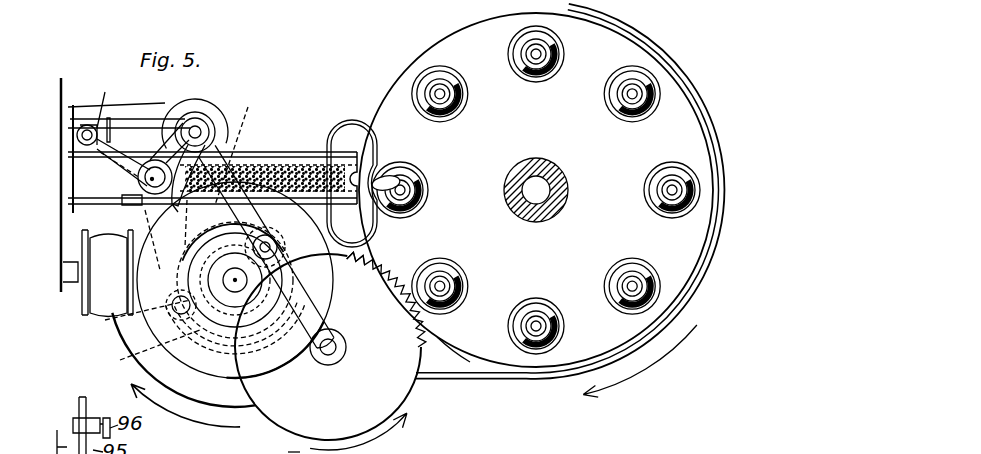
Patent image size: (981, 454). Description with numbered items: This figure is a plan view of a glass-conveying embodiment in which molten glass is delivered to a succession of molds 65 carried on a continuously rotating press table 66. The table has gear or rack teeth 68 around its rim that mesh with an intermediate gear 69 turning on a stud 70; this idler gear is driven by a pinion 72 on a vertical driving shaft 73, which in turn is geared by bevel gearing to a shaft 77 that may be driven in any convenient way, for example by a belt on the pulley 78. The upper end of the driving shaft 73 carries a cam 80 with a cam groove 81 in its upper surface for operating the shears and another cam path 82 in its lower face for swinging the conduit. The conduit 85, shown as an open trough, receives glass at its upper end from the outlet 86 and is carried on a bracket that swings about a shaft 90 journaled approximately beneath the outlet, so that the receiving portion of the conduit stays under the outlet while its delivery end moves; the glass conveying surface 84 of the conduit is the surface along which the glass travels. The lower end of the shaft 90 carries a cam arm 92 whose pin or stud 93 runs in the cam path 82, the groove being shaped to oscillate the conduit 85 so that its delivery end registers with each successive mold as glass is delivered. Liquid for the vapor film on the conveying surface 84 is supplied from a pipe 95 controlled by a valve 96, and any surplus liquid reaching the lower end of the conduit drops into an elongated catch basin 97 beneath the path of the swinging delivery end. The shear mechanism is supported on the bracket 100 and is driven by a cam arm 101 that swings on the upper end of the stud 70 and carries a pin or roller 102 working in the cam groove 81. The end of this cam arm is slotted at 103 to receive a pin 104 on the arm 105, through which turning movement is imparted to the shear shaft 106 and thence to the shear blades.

The molds 65 is at (534, 76).
The rotating mold or press table 66 is at (686, 90).
The gear or rack teeth 68 is at (437, 338).
The intermediate gear 69 is at (413, 327).
The stud 70 is at (330, 360).
The pinion 72 is at (150, 347).
The vertical driving shaft 73 is at (233, 285).
The shaft 77 is at (76, 283).
The pulley 78 is at (100, 310).
The cam 80 is at (258, 378).
The cam groove 81 is at (260, 317).
The cam path 82 is at (240, 369).
The strip 84 is at (300, 172).
The conduit 85 is at (258, 154).
The outlet 86 is at (117, 147).
The shaft 90 is at (130, 198).
The cam arm 92 is at (172, 216).
The pin or stud 93 is at (123, 331).
The pipe 95 is at (73, 125).
The valve 96 is at (96, 98).
The catch basin 97 is at (357, 218).
The bracket 100 is at (148, 114).
The cam arm 101 is at (330, 321).
The pin or roller 102 is at (327, 270).
The slot 103 is at (219, 147).
The pin 104 is at (268, 200).
The arm 105 is at (222, 150).
The shear shaft 106 is at (177, 210).